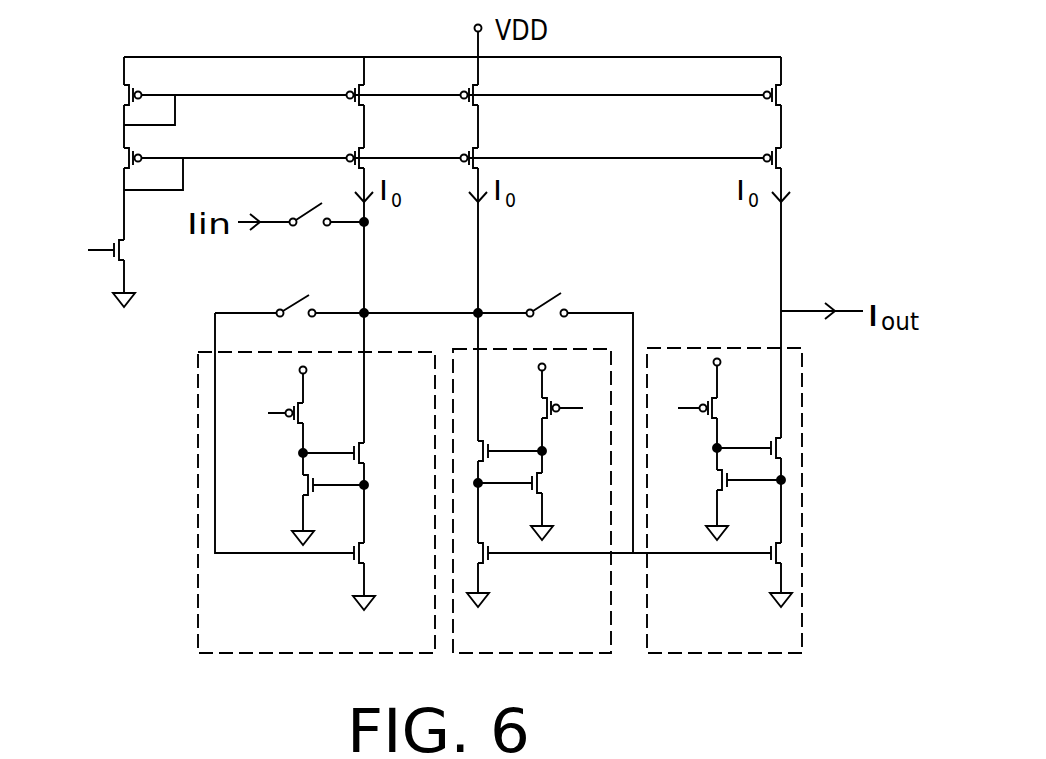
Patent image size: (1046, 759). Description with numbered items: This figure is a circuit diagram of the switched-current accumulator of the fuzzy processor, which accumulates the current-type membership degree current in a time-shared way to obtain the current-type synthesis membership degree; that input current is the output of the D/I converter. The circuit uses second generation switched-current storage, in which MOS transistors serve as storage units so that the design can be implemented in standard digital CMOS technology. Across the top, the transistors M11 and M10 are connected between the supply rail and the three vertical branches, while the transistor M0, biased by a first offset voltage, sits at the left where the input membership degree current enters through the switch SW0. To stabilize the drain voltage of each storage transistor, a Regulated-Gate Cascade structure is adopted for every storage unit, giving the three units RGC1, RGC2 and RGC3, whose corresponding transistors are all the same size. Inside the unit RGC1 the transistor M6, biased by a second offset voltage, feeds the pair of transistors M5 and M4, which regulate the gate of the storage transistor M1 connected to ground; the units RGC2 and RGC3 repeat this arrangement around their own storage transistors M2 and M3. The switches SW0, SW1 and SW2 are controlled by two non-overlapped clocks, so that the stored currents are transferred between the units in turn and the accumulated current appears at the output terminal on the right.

The PMOS current mirror transistor M11 is at (416, 94).
The PMOS current mirror transistor M10 is at (416, 158).
The input NMOS transistor M0 is at (109, 268).
The NMOS output transistor of RGC1 M1 is at (382, 554).
The NMOS output transistor of RGC2 M2 is at (503, 566).
The NMOS output transistor of RGC3 M3 is at (754, 566).
The NMOS transistor of regulated gate cascode M4 is at (309, 486).
The NMOS transistor of regulated gate cascode M5 is at (356, 454).
The PMOS bias transistor M6 is at (283, 407).
The switch SW0 is at (321, 219).
The switch SW1 is at (289, 309).
The switch SW2 is at (574, 411).
The RGC unit RGC1 is at (316, 483).
The RGC unit RGC2 is at (532, 501).
The RGC unit RGC3 is at (724, 500).